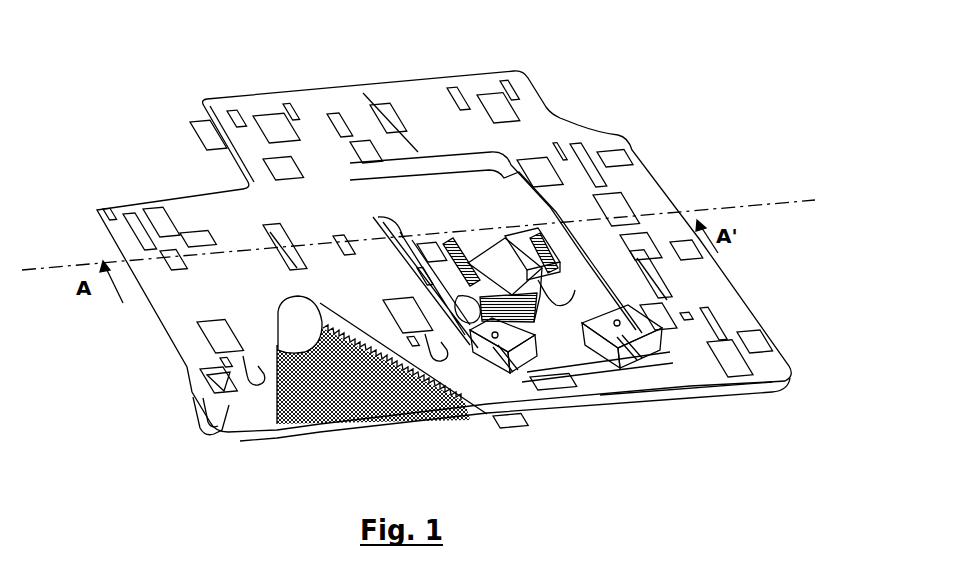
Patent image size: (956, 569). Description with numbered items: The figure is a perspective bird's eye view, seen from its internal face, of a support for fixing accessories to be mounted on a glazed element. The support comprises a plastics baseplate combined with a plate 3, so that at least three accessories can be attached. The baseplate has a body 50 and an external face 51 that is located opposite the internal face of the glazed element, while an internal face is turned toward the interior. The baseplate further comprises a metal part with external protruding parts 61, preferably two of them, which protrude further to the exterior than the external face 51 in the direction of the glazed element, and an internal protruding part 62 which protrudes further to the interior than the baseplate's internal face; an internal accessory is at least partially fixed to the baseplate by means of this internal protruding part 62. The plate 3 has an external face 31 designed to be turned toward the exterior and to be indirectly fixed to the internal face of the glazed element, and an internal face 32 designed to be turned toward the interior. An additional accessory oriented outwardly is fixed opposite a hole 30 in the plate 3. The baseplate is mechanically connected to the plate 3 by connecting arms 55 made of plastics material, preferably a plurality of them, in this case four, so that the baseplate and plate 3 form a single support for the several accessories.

The plate 3 is at (106, 73).
The connecting arm 55 is at (373, 216).
The hole 30 is at (293, 340).
The external face 51 is at (445, 238).
The body 50 is at (482, 272).
The external protruding part 61 is at (500, 235).
The internal protruding part 62 is at (478, 298).
The external face 31 is at (572, 338).
The internal face 32 is at (692, 393).